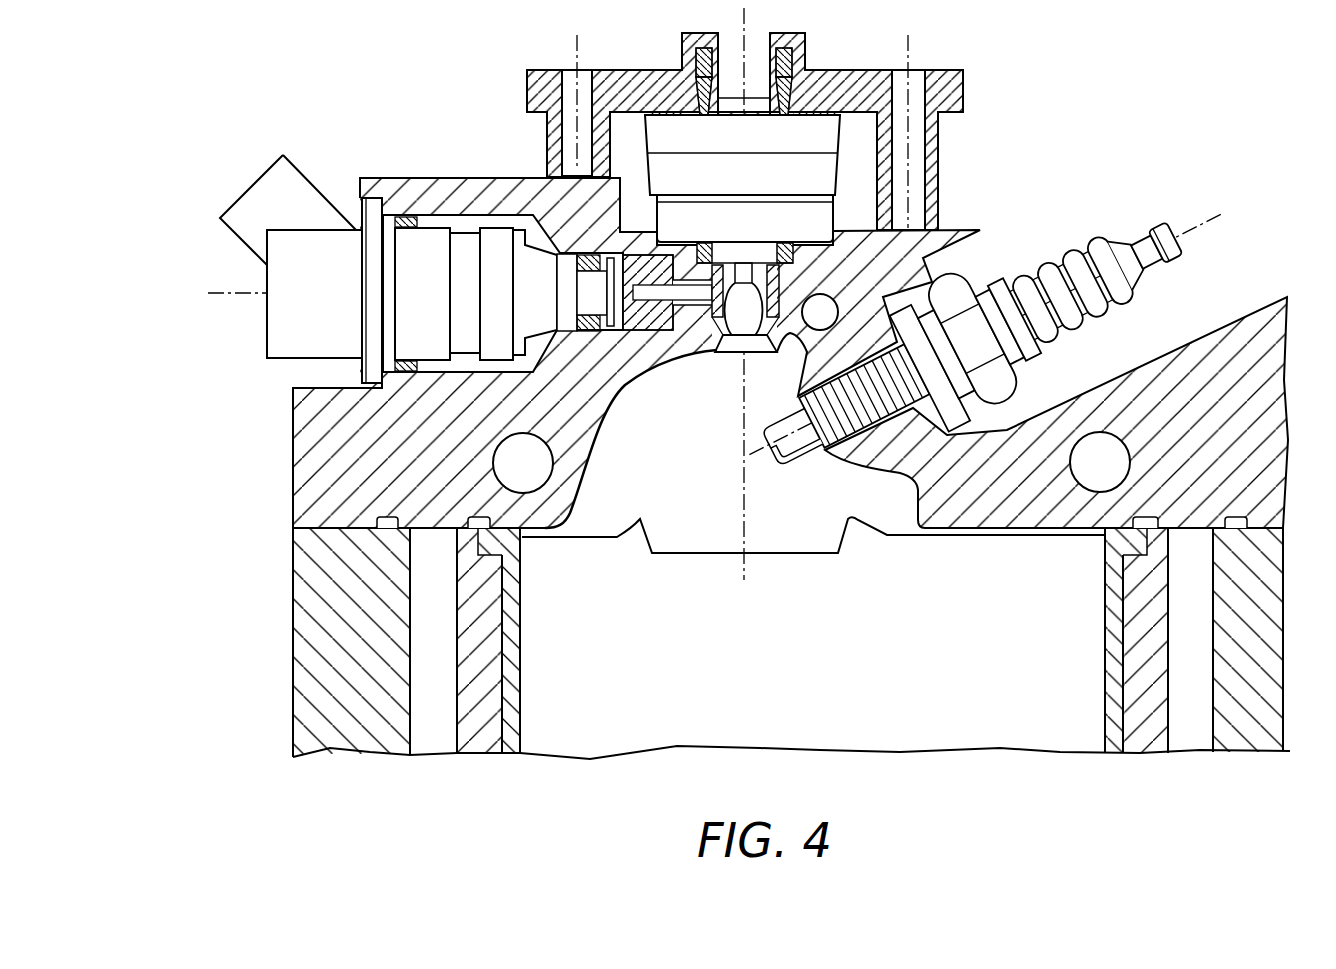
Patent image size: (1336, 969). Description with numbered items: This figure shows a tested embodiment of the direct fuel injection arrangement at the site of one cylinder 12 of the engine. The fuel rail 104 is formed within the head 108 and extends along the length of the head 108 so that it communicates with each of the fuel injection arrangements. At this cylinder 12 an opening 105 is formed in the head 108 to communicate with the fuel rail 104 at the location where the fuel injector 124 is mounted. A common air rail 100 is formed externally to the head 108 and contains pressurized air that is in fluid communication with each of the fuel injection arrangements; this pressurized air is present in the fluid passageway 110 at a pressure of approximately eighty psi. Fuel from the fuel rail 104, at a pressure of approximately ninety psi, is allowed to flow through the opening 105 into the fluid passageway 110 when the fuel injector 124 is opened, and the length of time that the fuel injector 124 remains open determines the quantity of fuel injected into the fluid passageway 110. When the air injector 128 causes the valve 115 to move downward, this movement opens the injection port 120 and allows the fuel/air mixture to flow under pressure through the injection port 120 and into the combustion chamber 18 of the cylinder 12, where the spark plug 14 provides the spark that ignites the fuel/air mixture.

The cylinder 12 is at (522, 663).
The spark plug 14 is at (1047, 263).
The combustion chamber 18 is at (628, 495).
The common air rail 100 is at (634, 335).
The fuel rail 104 is at (478, 406).
The opening 105 is at (463, 228).
The head 108 is at (298, 462).
The fluid passageway 110 is at (728, 318).
The valve 115 is at (812, 423).
The injection port 120 is at (764, 352).
The fuel injector 124 is at (280, 330).
The air injector 128 is at (826, 167).